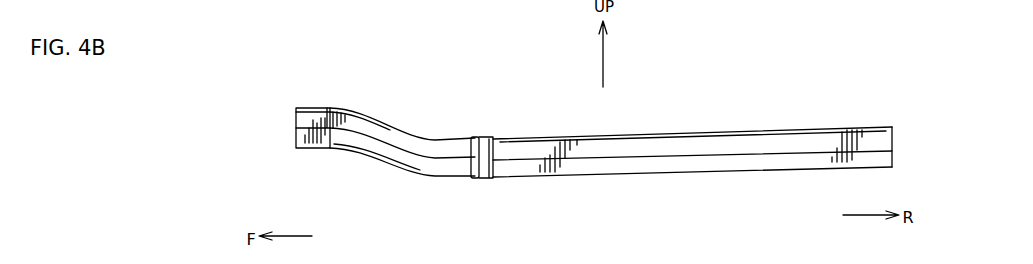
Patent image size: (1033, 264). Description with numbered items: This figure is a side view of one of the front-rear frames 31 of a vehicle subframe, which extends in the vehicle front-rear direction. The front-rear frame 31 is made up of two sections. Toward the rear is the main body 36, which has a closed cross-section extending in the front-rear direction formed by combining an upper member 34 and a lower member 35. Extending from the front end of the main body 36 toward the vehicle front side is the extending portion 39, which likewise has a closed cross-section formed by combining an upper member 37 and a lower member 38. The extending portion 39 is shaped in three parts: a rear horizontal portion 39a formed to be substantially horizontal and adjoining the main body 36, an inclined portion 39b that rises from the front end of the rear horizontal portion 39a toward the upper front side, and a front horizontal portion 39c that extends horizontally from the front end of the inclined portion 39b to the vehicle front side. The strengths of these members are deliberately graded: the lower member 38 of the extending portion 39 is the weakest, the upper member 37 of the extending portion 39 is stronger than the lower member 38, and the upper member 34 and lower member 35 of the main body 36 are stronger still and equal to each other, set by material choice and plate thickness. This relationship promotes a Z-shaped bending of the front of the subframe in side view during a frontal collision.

The front-rear frame 31 is at (495, 105).
The upper member 34 is at (670, 140).
The lower member 35 is at (722, 162).
The main body 36 is at (672, 73).
The upper member 37 is at (347, 114).
The lower member 38 is at (388, 150).
The extending portion 39 is at (332, 59).
The rear horizontal portion 39a is at (450, 177).
The inclined portion 39b is at (383, 162).
The front horizontal portion 39c is at (302, 149).